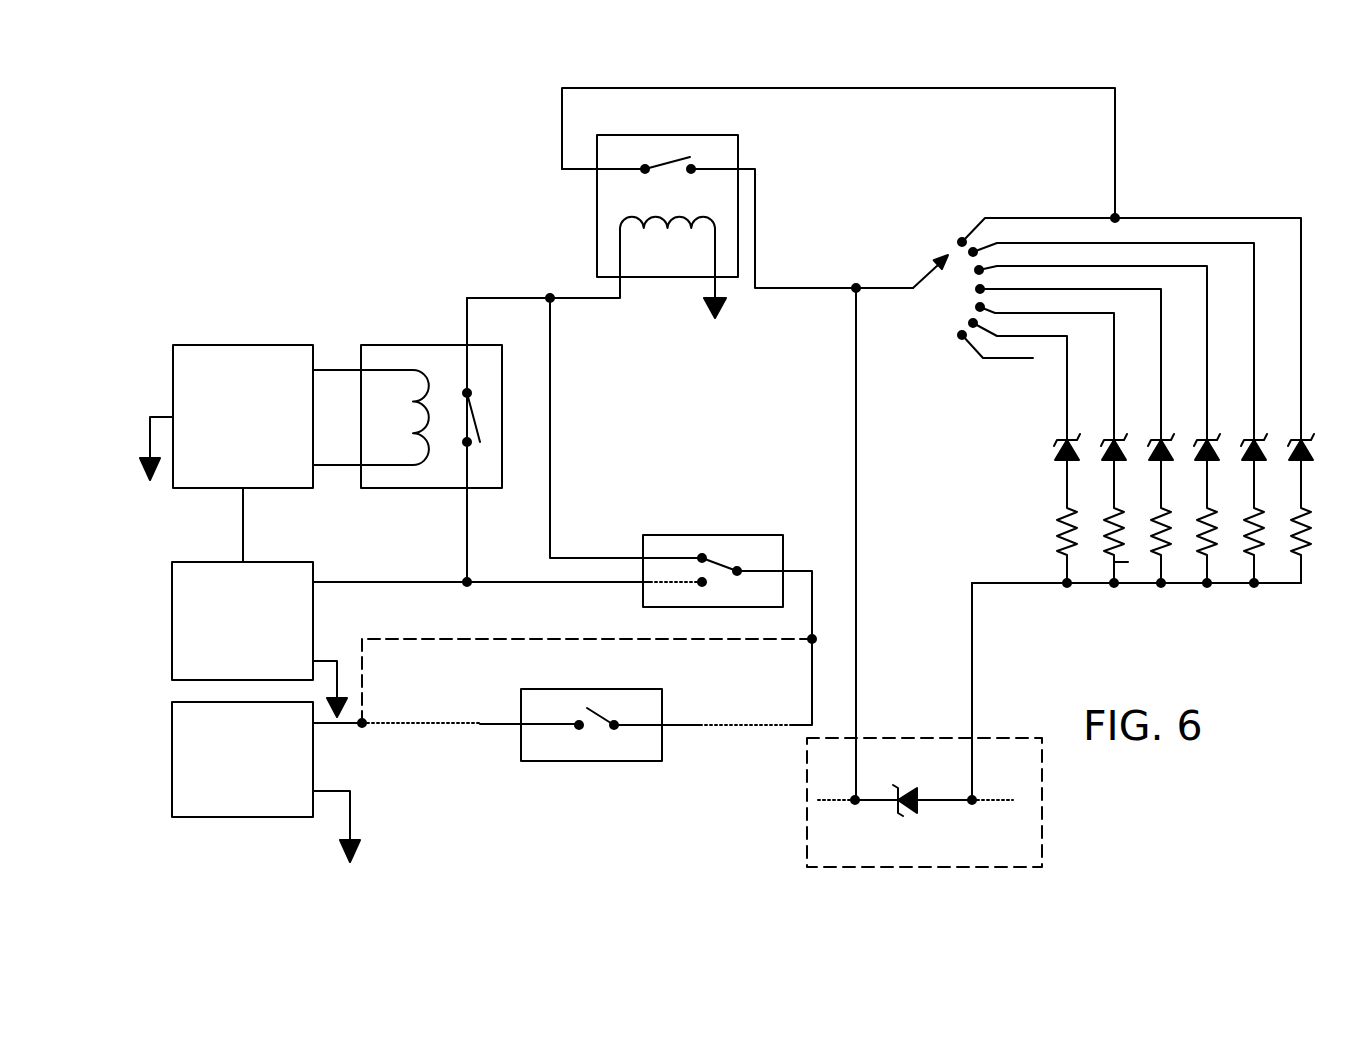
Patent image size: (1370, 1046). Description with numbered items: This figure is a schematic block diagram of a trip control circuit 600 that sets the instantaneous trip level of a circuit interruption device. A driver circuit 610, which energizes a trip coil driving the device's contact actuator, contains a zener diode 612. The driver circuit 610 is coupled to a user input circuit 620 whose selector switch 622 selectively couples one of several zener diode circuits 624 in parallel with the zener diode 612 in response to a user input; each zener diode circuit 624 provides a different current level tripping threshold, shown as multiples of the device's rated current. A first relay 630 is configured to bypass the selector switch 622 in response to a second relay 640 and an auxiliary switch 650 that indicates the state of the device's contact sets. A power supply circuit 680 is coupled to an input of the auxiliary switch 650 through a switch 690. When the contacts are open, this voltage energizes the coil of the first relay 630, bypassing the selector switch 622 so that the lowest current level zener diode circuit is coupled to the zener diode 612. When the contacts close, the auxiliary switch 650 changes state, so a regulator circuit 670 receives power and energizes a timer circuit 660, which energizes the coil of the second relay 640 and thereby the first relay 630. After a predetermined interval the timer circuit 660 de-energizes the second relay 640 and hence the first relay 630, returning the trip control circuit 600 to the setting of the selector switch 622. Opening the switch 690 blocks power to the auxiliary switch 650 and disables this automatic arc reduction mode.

The trip control circuit 600 is at (305, 117).
The driver circuit 610 is at (924, 786).
The zener diode 612 is at (925, 833).
The user input circuit 620 is at (1074, 470).
The selector switch 622 is at (912, 238).
The zener diode circuits 624 is at (1035, 484).
The first relay 630 is at (665, 135).
The second relay 640 is at (432, 345).
The auxiliary switch 650 is at (712, 535).
The timer circuit 660 is at (243, 345).
The regulator circuit 670 is at (290, 562).
The power supply circuit 680 is at (245, 817).
The switch 690 is at (590, 689).